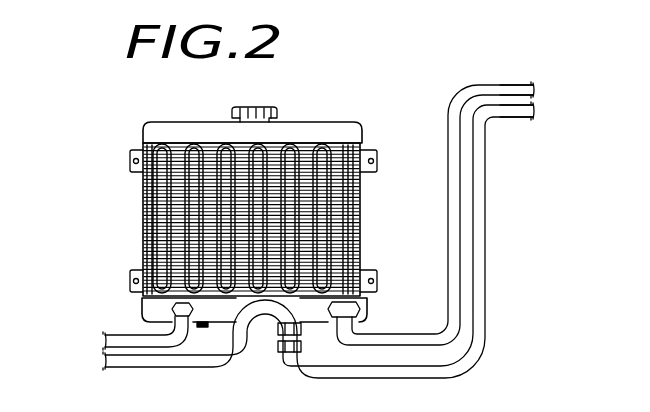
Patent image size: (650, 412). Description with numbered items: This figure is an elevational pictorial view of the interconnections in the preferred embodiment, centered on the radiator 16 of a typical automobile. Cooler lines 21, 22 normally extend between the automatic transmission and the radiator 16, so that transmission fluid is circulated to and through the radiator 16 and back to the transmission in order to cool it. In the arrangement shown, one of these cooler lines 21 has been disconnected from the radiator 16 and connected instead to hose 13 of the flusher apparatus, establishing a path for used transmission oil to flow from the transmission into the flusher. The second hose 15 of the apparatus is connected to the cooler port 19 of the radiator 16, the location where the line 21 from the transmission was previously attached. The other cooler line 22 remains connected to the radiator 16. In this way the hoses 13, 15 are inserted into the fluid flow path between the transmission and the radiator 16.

The hose 13 is at (512, 118).
The second hose 15 is at (498, 84).
The radiator 16 is at (143, 215).
The cooler port 19 is at (337, 303).
The cooler line 21 is at (232, 350).
The cooler line 22 is at (112, 337).